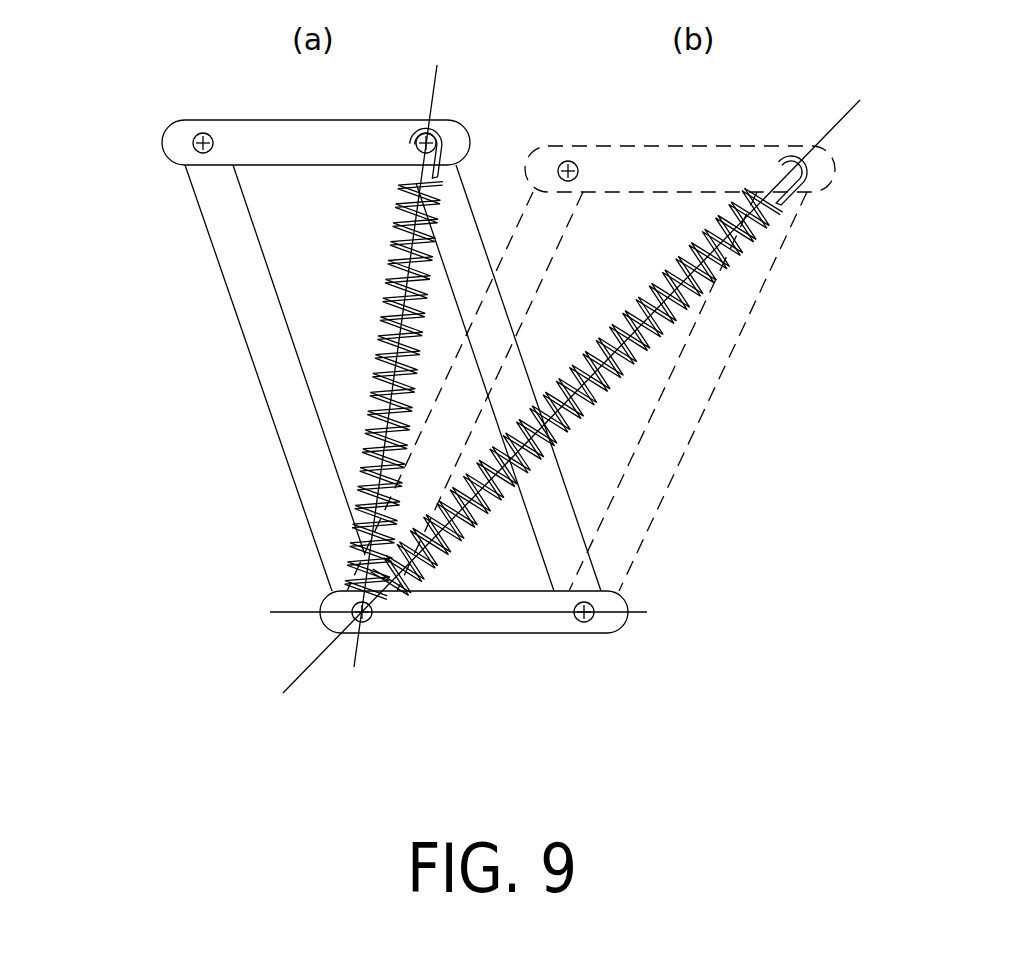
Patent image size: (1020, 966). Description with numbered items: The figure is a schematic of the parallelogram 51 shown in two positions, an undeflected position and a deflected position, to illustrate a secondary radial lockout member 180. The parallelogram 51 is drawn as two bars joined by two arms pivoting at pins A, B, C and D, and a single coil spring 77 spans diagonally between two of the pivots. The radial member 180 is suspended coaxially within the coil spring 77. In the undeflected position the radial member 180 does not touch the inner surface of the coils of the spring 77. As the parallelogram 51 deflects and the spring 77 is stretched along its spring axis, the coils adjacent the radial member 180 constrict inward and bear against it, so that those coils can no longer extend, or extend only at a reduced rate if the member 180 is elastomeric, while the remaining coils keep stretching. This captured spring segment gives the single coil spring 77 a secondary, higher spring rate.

The parallelogram 51 is at (243, 428).
The coil spring 77 is at (402, 204).
The radial lockout member 180 is at (374, 364).
The pivot pin A is at (207, 135).
The pivot pin B is at (431, 132).
The pivot pin C is at (369, 625).
The pivot pin D is at (592, 621).